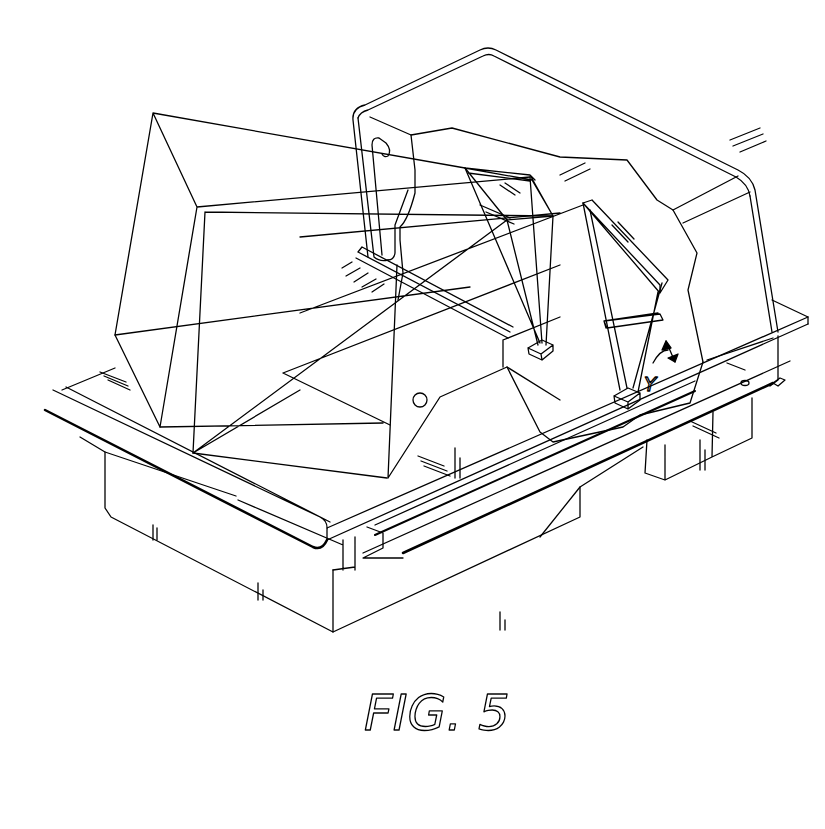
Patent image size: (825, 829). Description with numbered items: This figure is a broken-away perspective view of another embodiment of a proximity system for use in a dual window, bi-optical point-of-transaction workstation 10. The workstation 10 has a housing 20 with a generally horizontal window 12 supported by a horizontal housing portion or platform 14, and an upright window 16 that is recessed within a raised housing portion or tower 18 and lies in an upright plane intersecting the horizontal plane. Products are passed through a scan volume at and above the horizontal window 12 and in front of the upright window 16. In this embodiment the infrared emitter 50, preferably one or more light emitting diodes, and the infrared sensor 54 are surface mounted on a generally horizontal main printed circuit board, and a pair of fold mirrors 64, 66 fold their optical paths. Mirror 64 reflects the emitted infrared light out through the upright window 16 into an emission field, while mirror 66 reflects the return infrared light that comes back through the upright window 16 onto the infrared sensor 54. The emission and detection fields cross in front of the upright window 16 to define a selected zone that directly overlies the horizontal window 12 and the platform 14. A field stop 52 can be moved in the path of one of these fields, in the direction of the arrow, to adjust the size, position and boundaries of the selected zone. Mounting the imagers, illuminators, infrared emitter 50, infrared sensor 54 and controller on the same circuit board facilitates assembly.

The point-of-transaction workstation 10 is at (322, 102).
The horizontal window 12 is at (423, 407).
The platform 14 is at (360, 497).
The upright window 16 is at (390, 150).
The tower 18 is at (748, 257).
The housing 20 is at (703, 147).
The IR emitter 50 is at (625, 408).
The field stop 52 is at (660, 323).
The IR sensor 54 is at (545, 357).
The fold mirror 64 is at (627, 243).
The fold mirror 66 is at (507, 176).